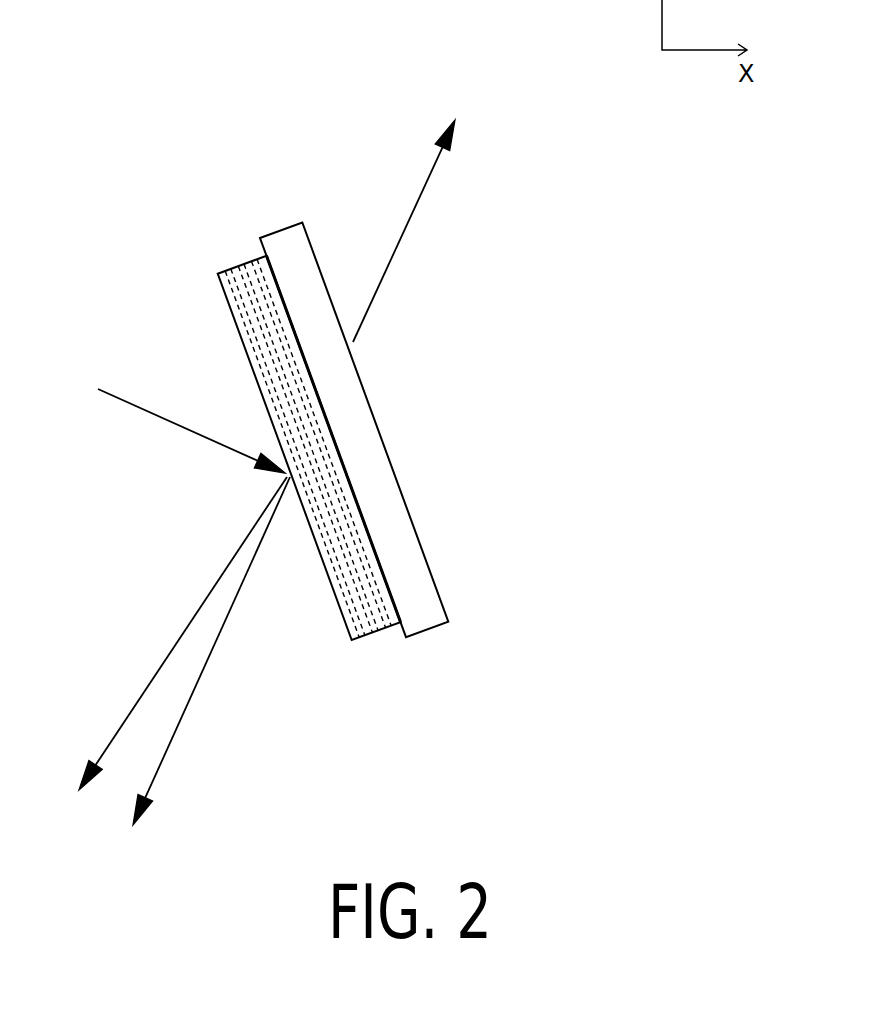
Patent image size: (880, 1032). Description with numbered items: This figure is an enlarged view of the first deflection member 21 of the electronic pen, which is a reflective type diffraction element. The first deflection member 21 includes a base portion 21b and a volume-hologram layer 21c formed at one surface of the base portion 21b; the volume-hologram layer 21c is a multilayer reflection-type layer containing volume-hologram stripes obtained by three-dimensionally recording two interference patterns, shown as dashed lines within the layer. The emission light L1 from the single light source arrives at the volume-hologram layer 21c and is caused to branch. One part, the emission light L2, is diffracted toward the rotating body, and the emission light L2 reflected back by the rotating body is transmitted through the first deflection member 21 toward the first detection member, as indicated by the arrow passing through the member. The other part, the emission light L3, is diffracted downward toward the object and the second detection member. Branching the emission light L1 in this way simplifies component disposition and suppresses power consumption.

The first deflection member 21 is at (394, 473).
The base portion 21b is at (425, 622).
The volume-hologram layer 21c is at (237, 295).
The emission light L1 is at (142, 410).
The emission light L2 is at (407, 227).
The emission light L3 is at (157, 672).